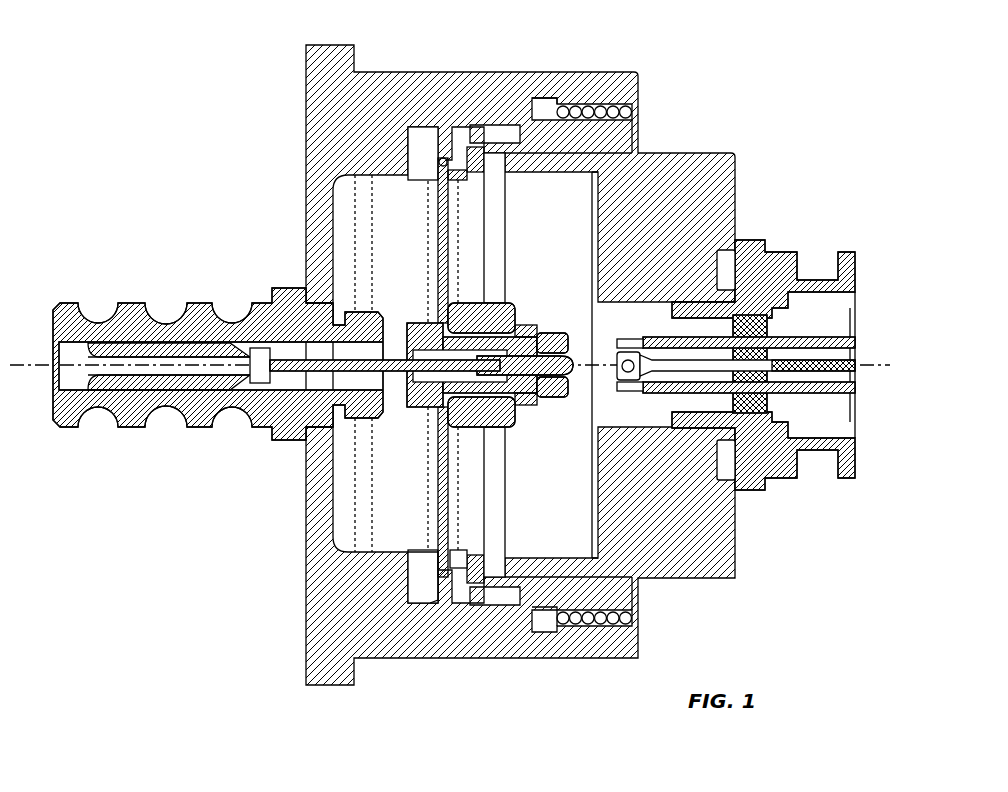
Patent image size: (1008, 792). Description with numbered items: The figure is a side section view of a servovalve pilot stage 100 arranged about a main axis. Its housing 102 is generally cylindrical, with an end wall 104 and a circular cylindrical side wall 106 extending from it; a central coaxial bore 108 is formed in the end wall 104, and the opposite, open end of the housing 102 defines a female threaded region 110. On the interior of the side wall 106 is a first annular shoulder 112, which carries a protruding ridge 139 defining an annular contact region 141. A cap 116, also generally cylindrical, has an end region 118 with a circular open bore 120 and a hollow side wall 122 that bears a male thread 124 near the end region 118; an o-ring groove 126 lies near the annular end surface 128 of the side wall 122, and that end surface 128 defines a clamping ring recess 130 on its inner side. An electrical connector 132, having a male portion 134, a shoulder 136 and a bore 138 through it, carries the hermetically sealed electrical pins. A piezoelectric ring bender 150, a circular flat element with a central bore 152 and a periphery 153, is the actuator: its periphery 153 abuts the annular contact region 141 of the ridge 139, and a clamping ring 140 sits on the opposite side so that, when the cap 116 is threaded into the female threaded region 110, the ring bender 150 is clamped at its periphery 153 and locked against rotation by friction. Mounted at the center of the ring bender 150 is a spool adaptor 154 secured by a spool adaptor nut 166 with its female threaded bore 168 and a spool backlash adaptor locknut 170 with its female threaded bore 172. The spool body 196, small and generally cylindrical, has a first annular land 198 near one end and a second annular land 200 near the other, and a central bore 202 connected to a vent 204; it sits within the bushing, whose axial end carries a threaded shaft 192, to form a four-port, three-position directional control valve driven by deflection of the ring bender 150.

The servovalve pilot stage 100 is at (785, 103).
The housing 102 is at (470, 72).
The end wall 104 is at (306, 182).
The side wall 106 is at (514, 647).
The central coaxial bore 108 is at (308, 452).
The female threaded region 110 is at (597, 108).
The first annular shoulder 112 is at (420, 158).
The cap 116 is at (692, 165).
The end region 118 is at (696, 534).
The circular open bore 120 is at (665, 450).
The side wall 122 is at (547, 612).
The male thread 124 is at (597, 626).
The o-ring groove 126 is at (505, 135).
The annular end surface 128 is at (450, 598).
The clamping ring recess 130 is at (450, 583).
The electrical connector 132 is at (808, 234).
The male portion 134 is at (700, 300).
The shoulder 136 is at (733, 462).
The bore 138 is at (838, 318).
The ridge 139 is at (413, 555).
The clamping ring 140 is at (472, 160).
The annular contact region 141 is at (433, 552).
The piezoelectric ring bender 150 is at (437, 512).
The central bore 152 is at (443, 405).
The periphery 153 is at (440, 160).
The spool adaptor 154 is at (413, 325).
The spool adaptor nut 166 is at (505, 316).
The female threaded bore 168 is at (505, 413).
The spool backlash adaptor locknut 170 is at (555, 338).
The female threaded bore 172 is at (552, 394).
The threaded shaft 192 is at (371, 312).
The spool body 196 is at (160, 350).
The first annular land 198 is at (100, 340).
The second annular land 200 is at (233, 340).
The central bore 202 is at (141, 366).
The vent 204 is at (237, 385).